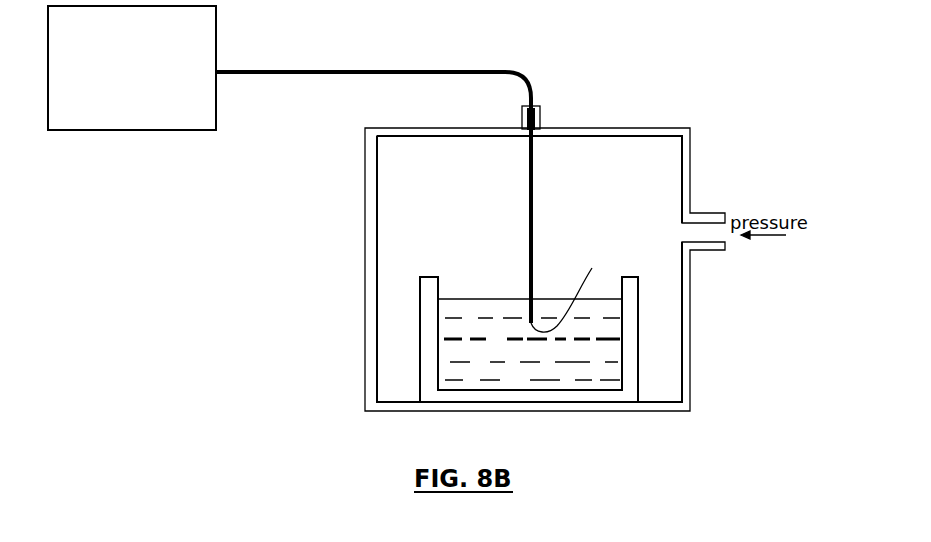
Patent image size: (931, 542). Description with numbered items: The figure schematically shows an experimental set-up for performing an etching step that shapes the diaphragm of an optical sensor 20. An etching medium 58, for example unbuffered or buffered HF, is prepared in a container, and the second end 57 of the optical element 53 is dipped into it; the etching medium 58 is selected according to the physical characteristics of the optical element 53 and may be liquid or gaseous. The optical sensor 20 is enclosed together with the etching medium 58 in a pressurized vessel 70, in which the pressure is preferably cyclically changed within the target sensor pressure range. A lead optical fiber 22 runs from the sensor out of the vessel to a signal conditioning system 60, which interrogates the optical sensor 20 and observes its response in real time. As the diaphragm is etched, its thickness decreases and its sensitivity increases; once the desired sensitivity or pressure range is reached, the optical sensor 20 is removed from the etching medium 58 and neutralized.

The signal conditioning system 60 is at (146, 93).
The lead optical fiber 22 is at (410, 68).
The optical sensor 20 is at (549, 276).
The pressurized vessel 70 is at (630, 128).
The etching medium 58 is at (610, 386).
The optical element 53 is at (531, 308).
The second end 57 is at (576, 290).